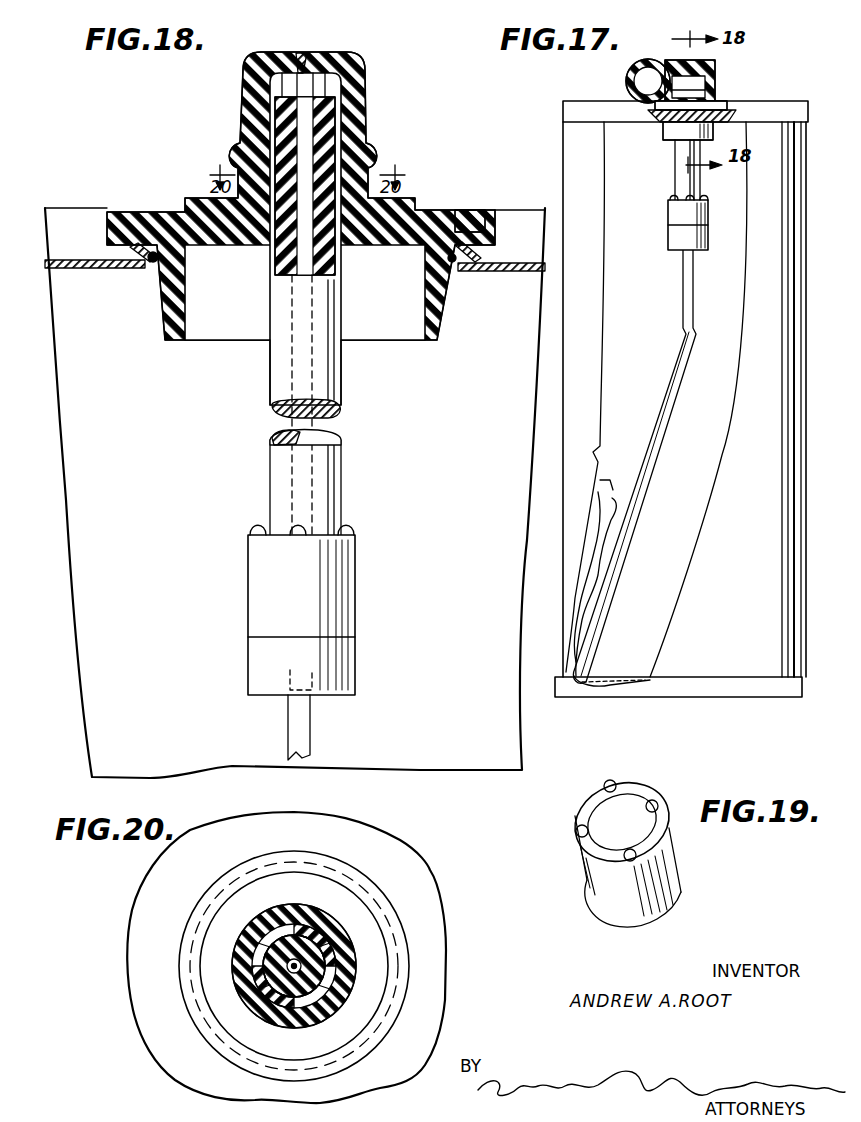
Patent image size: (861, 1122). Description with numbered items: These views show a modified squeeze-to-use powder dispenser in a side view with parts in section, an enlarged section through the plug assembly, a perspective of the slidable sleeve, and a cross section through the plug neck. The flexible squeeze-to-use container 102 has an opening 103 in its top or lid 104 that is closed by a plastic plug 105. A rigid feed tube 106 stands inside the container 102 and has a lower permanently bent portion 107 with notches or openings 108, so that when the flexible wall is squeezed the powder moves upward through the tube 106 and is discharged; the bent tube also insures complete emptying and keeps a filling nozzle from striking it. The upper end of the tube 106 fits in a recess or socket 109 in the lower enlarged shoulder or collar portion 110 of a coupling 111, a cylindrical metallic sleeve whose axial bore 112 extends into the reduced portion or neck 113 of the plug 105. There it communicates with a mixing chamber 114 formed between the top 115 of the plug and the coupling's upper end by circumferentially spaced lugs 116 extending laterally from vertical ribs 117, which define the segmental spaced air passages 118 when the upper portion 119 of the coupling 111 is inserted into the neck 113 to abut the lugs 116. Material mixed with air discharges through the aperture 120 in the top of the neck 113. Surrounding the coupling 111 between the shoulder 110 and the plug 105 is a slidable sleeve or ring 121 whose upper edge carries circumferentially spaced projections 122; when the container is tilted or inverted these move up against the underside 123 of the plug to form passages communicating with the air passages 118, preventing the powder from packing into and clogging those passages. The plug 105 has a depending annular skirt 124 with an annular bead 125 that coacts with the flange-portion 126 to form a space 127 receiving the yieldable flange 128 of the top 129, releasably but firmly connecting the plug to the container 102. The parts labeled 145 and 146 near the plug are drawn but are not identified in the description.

In FIG. 18, the flexible squeeze-to-use container 102 is at (530, 708).
In FIG. 17, the flexible squeeze-to-use container 102 is at (772, 688).
In FIG. 18, the opening 103 is at (153, 262).
In FIG. 17, the opening 103 is at (658, 120).
In FIG. 18, the top or lid 104 is at (108, 270).
In FIG. 17, the top or lid 104 is at (782, 108).
In FIG. 18, the plastic plug 105 is at (408, 202).
In FIG. 18, the rigid feed tube 106 is at (310, 742).
In FIG. 17, the rigid feed tube 106 is at (690, 318).
In FIG. 17, the lower permanently bent portion 107 is at (607, 591).
In FIG. 17, the notches or openings 108 is at (601, 576).
In FIG. 18, the recess or socket 109 is at (283, 690).
In FIG. 18, the lower enlarged shoulder or collar portion 110 is at (345, 692).
In FIG. 17, the lower enlarged shoulder or collar portion 110 is at (710, 240).
In FIG. 18, the coupling 111 is at (338, 482).
In FIG. 17, the coupling 111 is at (676, 185).
In FIG. 18, the axial bore 112 is at (300, 436).
In FIG. 20, the axial bore 112 is at (300, 965).
In FIG. 18, the reduced portion or neck 113 is at (352, 134).
In FIG. 17, the reduced portion or neck 113 is at (702, 64).
In FIG. 20, the reduced portion or neck 113 is at (302, 905).
In FIG. 18, the mixing chamber 114 is at (320, 84).
In FIG. 18, the top of the plug 115 is at (258, 55).
In FIG. 18, the circumferentially spaced lugs 116 is at (264, 92).
In FIG. 20, the vertical ribs 117 is at (305, 925).
In FIG. 18, the segmental spaced air passages 118 is at (262, 118).
In FIG. 20, the segmental spaced air passages 118 is at (285, 915).
In FIG. 18, the upper portion of the coupling 119 is at (330, 118).
In FIG. 20, the upper portion of the coupling 119 is at (340, 980).
In FIG. 18, the aperture 120 is at (302, 58).
In FIG. 18, the slidable sleeve or ring 121 is at (340, 612).
In FIG. 17, the slidable sleeve or ring 121 is at (710, 215).
In FIG. 19, the slidable sleeve or ring 121 is at (642, 903).
In FIG. 18, the circumferentially spaced projections 122 is at (348, 525).
In FIG. 17, the circumferentially spaced projections 122 is at (712, 190).
In FIG. 19, the circumferentially spaced projections 122 is at (616, 781).
In FIG. 18, the underside of the plug 123 is at (211, 246).
In FIG. 18, the depending annular skirt 124 is at (436, 340).
In FIG. 18, the annular bead 125 is at (455, 272).
In FIG. 18, the flange-portion 126 is at (480, 212).
In FIG. 18, the space 127 is at (466, 210).
In FIG. 18, the yieldable flange 128 is at (133, 262).
In FIG. 18, the top 129 is at (520, 258).
In FIG. 17, the cap insert 145 is at (710, 82).
In FIG. 17, the pull ring 146 is at (626, 84).